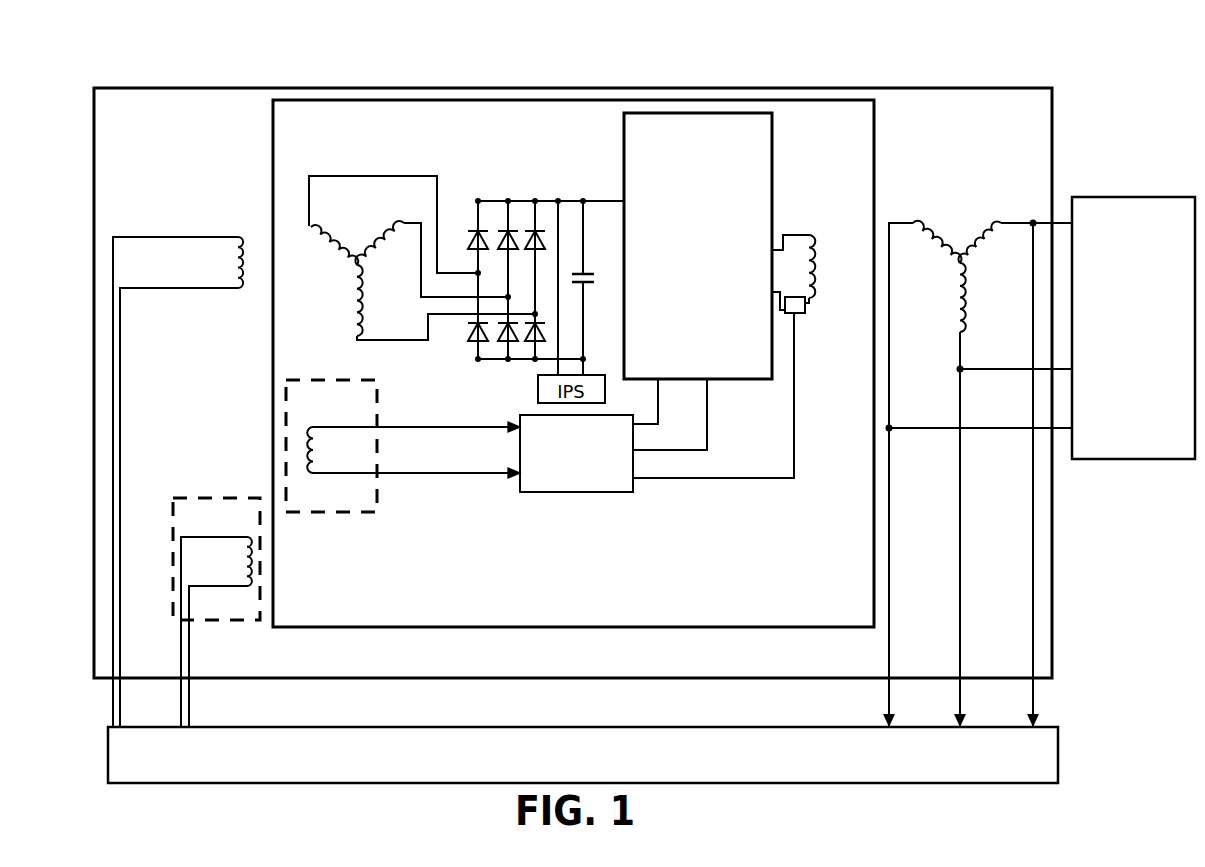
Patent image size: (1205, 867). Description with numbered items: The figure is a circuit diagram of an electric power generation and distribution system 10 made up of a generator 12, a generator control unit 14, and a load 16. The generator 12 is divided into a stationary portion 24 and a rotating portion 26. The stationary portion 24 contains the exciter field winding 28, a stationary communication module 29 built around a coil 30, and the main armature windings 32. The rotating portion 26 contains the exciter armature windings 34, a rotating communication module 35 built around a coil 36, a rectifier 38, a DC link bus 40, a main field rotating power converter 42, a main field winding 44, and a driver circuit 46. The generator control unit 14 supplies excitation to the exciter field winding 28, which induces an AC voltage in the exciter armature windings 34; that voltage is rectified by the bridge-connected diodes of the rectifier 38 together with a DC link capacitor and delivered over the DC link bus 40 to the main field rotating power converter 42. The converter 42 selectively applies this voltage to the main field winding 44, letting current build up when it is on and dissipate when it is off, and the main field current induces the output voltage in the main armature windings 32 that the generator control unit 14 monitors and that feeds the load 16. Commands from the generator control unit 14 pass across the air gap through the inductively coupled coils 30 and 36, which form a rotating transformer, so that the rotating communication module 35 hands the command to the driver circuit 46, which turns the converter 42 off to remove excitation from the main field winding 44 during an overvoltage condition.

The electric power generation and distribution system 10 is at (169, 63).
The generator 12 is at (265, 88).
The generator control unit (GCU) 14 is at (1058, 760).
The load 16 is at (1088, 197).
The stationary portion 24 is at (190, 121).
The rotating portion 26 is at (526, 143).
The exciter field winding 28 is at (235, 288).
The stationary communication module 29 is at (225, 620).
The coil 30 is at (247, 537).
The main armature windings 32 is at (992, 238).
The exciter armature windings 34 is at (377, 242).
The rotating communication module 35 is at (320, 378).
The coil 36 is at (310, 433).
The rectifier 38 is at (492, 372).
The DC link bus 40 is at (595, 199).
The main field rotating power converter 42 is at (773, 158).
The main field winding 44 is at (812, 243).
The driver circuit 46 is at (806, 311).